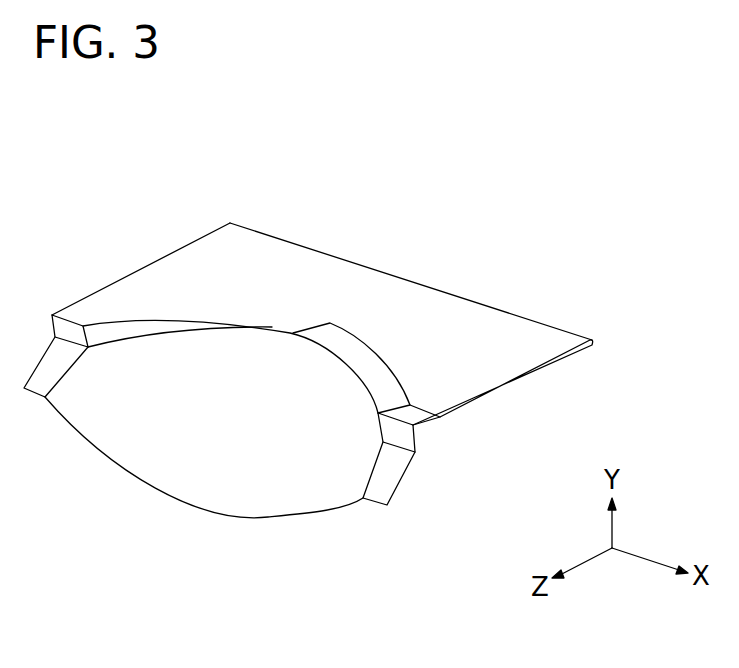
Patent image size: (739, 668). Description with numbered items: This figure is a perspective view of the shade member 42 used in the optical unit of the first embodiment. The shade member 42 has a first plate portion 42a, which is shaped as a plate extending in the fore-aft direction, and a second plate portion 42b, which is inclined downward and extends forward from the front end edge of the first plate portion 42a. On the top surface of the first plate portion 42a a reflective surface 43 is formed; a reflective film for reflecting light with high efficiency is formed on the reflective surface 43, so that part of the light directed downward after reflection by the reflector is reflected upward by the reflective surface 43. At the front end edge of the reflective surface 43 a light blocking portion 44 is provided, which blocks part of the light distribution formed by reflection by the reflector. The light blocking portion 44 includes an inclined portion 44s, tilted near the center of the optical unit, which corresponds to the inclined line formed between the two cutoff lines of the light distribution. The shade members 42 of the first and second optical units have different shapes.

The shade member 42 is at (450, 213).
The first plate portion 42a is at (462, 406).
The second plate portion 42b is at (292, 518).
The reflective surface 43 is at (540, 343).
The light blocking portion 44 is at (342, 337).
The inclined portion 44s is at (293, 334).